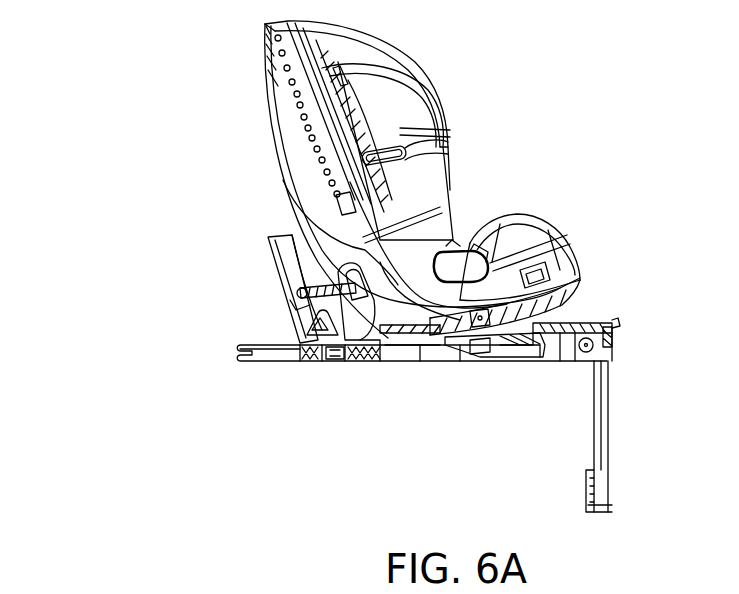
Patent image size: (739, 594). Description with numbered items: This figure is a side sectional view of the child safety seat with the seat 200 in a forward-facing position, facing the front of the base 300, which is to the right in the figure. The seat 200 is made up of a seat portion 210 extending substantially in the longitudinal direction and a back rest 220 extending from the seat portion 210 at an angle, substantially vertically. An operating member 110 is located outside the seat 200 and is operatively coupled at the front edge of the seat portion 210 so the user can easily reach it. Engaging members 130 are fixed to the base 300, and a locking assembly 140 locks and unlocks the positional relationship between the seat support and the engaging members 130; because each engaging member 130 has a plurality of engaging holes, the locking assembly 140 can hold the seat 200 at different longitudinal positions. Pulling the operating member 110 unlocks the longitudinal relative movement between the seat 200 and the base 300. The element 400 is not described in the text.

The operating member 110 is at (575, 262).
The engaging member 130 is at (424, 343).
The locking assembly 140 is at (470, 337).
The seat 200 is at (270, 168).
The seat portion 210 is at (548, 316).
The back rest 220 is at (270, 115).
The base 300 is at (270, 295).
The base frame 400 is at (270, 330).